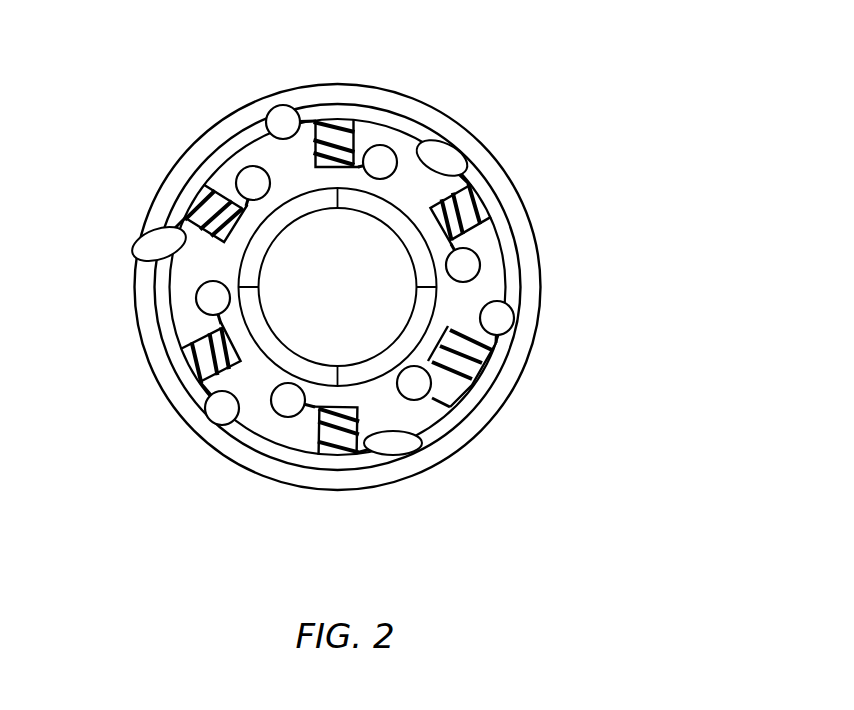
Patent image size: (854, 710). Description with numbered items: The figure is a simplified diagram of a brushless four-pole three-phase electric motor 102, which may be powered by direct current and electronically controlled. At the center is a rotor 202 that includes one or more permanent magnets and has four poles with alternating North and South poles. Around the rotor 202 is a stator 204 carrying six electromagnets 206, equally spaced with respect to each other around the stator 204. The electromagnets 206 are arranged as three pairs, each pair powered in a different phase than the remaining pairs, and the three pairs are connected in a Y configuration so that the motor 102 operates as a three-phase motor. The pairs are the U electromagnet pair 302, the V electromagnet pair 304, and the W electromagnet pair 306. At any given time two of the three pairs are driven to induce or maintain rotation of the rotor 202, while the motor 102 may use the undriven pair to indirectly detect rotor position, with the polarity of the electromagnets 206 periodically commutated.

The motor 102 is at (406, 302).
The rotor 202 is at (375, 367).
The stator 204 is at (520, 290).
The electromagnets 206 is at (350, 100).
The 'U' electromagnet pair 302 is at (283, 104).
The 'V' electromagnet pair 304 is at (196, 297).
The 'W' electromagnet pair 306 is at (242, 172).